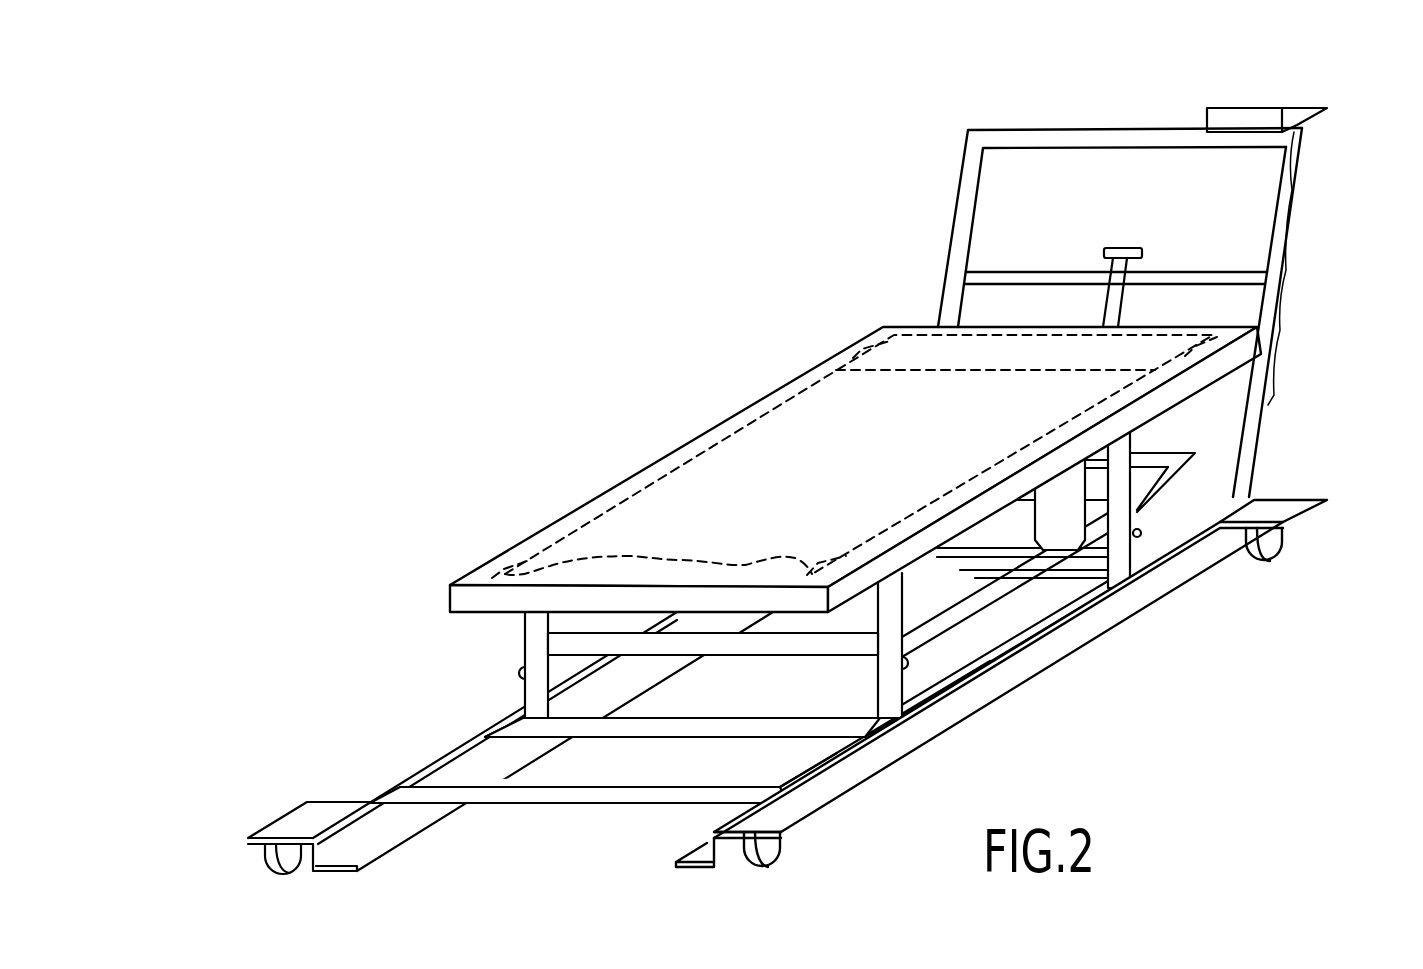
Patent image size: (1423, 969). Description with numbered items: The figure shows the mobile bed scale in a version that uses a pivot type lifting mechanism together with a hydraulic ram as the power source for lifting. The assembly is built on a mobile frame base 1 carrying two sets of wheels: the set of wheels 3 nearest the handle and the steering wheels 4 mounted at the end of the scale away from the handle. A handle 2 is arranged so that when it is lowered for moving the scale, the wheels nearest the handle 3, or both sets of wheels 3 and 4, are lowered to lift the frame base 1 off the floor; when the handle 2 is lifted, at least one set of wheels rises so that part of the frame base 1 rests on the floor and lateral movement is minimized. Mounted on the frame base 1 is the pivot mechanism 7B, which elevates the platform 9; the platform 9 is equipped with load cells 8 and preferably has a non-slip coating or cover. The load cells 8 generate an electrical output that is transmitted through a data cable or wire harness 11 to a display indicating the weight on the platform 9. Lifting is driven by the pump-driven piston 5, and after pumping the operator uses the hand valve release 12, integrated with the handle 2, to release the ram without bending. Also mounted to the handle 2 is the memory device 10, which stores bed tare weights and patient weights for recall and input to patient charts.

The mobile frame base 1 is at (1042, 689).
The handle 2 is at (980, 226).
The wheels nearest the handle 3 is at (1270, 566).
The steering wheels 4 is at (258, 867).
The pump-driven piston 5 is at (1070, 529).
The pivot mechanism 7B is at (1122, 480).
The load cells 8 is at (854, 456).
The platform 9 is at (876, 472).
The memory device 10 is at (1312, 94).
The data cable or wire harness 11 is at (1272, 343).
The hand valve release 12 is at (1150, 264).